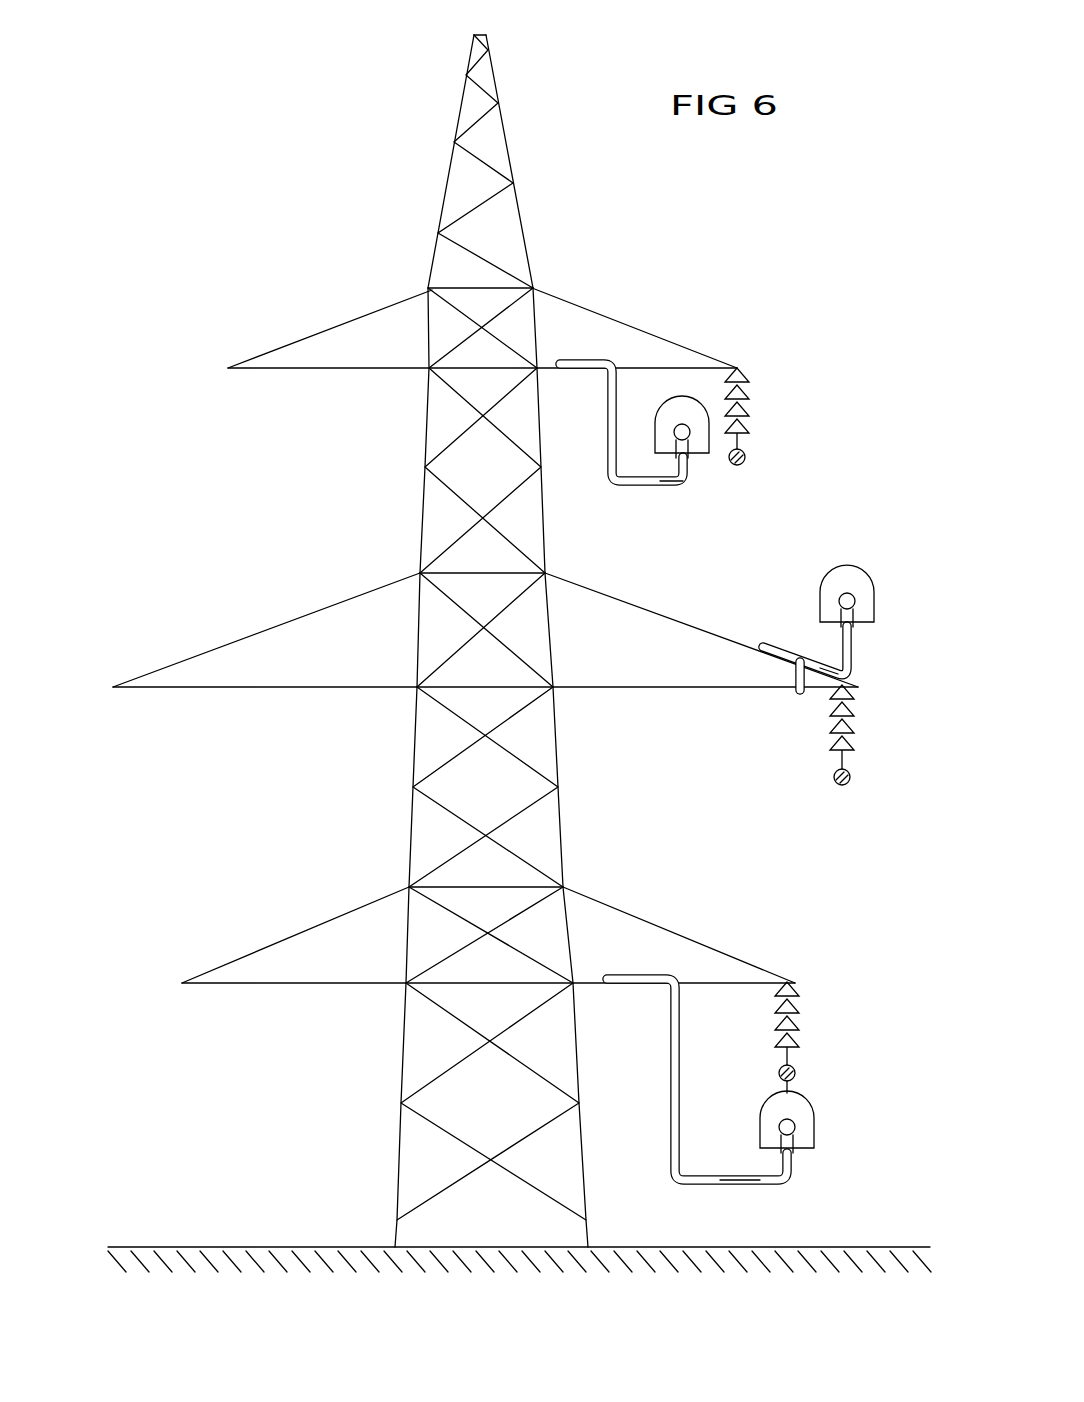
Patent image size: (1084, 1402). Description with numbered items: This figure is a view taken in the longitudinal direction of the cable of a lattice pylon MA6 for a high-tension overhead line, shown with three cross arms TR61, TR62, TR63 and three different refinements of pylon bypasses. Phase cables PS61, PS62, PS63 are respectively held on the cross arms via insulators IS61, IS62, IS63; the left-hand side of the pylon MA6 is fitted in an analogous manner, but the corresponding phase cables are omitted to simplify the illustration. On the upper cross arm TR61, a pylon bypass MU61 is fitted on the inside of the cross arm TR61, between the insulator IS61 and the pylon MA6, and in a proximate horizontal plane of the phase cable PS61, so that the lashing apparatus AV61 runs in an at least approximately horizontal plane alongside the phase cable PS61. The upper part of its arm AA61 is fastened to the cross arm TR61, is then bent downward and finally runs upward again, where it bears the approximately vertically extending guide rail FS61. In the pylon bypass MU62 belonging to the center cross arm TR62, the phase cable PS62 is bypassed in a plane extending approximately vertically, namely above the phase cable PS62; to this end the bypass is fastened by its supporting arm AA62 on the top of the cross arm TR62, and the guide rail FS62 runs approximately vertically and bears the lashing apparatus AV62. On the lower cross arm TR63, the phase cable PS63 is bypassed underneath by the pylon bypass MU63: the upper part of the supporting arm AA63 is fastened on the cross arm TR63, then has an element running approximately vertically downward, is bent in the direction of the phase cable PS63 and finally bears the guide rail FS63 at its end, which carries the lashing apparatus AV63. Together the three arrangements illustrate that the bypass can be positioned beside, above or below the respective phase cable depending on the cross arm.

The lattice pylon MA6 is at (420, 505).
The cross arm TR61 is at (592, 300).
The cross arm TR62 is at (605, 688).
The cross arm TR63 is at (678, 930).
The lashing apparatus AV61 is at (683, 408).
The lashing apparatus AV62 is at (847, 575).
The lashing apparatus AV63 is at (800, 1108).
The insulator IS61 is at (752, 405).
The insulator IS62 is at (850, 748).
The insulator IS63 is at (800, 1007).
The phase cable PS61 is at (746, 457).
The phase cable PS62 is at (833, 777).
The phase cable PS63 is at (779, 1073).
The arm AA61 is at (605, 435).
The arm AA62 is at (793, 675).
The arm AA63 is at (672, 1057).
The pylon bypass MU61 is at (655, 508).
The pylon bypass MU62 is at (822, 641).
The pylon bypass MU63 is at (715, 1202).
The guide rail FS61 is at (690, 468).
The guide rail FS62 is at (853, 640).
The guide rail FS63 is at (793, 1167).